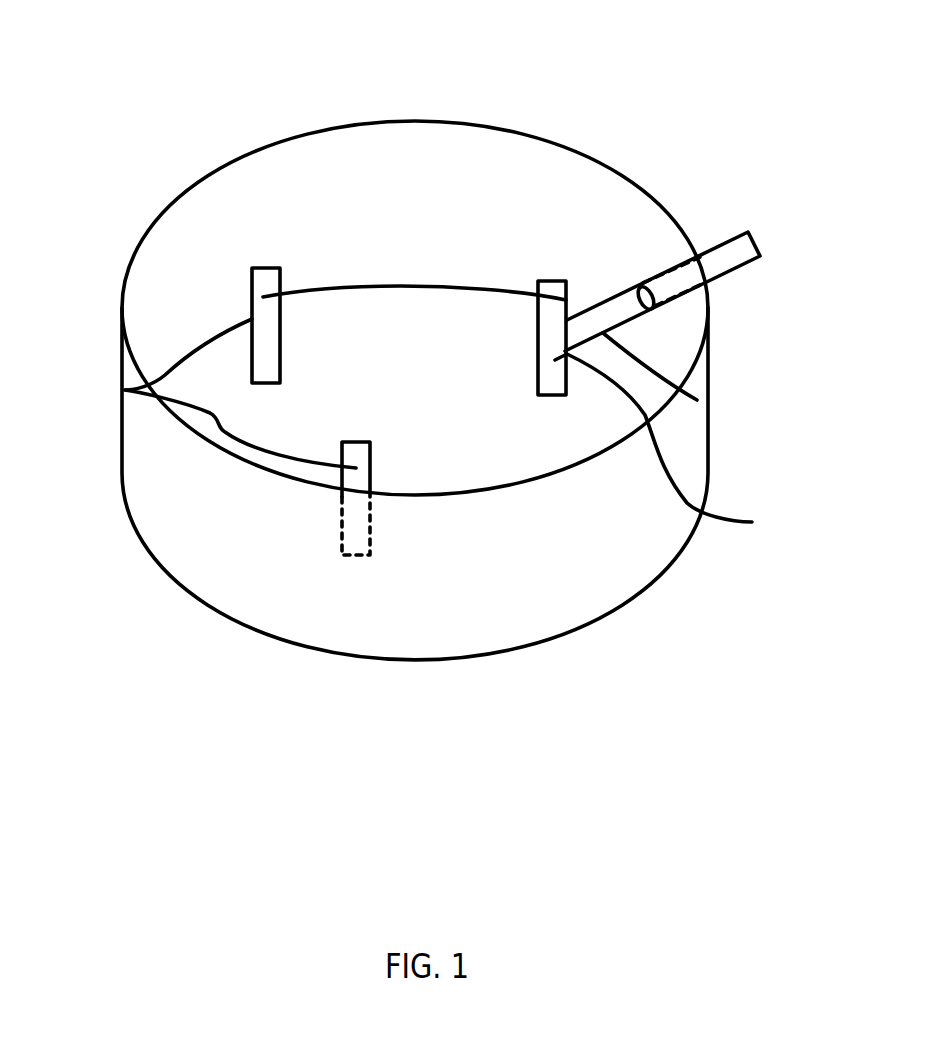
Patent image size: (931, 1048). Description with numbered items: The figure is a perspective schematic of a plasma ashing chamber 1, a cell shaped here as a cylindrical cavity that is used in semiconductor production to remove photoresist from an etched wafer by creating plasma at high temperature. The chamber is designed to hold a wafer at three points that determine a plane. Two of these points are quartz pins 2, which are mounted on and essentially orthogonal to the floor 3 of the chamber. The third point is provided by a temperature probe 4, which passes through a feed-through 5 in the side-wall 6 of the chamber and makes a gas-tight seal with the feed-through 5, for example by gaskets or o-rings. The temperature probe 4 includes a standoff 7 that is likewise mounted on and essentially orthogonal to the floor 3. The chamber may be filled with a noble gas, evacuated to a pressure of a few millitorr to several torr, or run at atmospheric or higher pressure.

The plasma ashing chamber 1 is at (349, 67).
The quartz pins 2 is at (263, 297).
The floor 3 is at (402, 320).
The temperature probe 4 is at (598, 254).
The feed-through 5 is at (660, 306).
The side-wall 6 is at (708, 402).
The standoff 7 is at (663, 436).